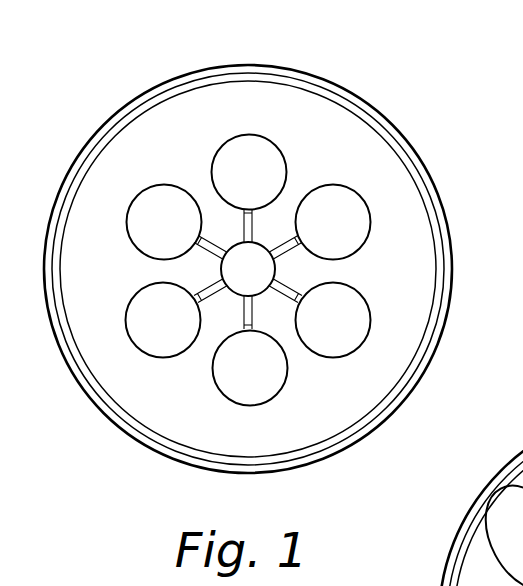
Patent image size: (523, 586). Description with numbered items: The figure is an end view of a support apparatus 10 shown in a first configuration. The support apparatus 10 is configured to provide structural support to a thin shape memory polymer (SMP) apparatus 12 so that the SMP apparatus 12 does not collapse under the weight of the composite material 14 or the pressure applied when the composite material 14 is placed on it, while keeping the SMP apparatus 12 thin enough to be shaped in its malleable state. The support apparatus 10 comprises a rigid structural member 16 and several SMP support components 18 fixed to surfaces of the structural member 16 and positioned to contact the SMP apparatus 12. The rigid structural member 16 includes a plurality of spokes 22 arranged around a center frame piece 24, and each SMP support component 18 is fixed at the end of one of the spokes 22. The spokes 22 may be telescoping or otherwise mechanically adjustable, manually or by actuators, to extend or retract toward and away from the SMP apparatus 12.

The support apparatus 10 is at (184, 127).
The shape memory polymer (SMP) apparatus 12 is at (147, 438).
The composite material 14 is at (127, 110).
The rigid structural member 16 is at (220, 274).
The SMP support component 18 is at (278, 170).
The spoke 22 is at (272, 260).
The center frame piece 24 is at (258, 288).